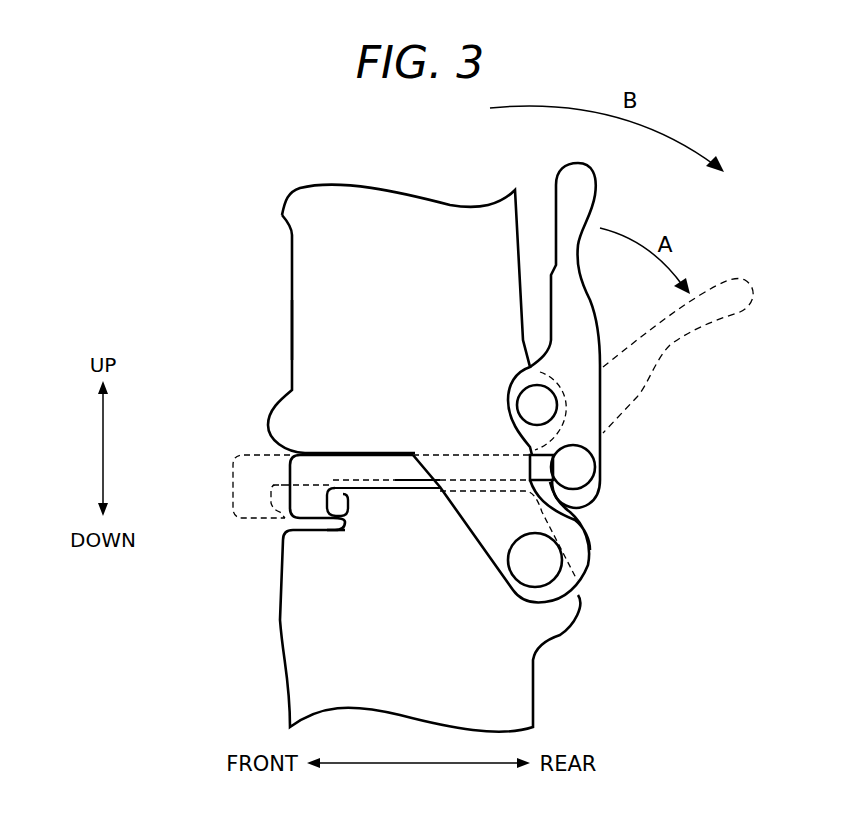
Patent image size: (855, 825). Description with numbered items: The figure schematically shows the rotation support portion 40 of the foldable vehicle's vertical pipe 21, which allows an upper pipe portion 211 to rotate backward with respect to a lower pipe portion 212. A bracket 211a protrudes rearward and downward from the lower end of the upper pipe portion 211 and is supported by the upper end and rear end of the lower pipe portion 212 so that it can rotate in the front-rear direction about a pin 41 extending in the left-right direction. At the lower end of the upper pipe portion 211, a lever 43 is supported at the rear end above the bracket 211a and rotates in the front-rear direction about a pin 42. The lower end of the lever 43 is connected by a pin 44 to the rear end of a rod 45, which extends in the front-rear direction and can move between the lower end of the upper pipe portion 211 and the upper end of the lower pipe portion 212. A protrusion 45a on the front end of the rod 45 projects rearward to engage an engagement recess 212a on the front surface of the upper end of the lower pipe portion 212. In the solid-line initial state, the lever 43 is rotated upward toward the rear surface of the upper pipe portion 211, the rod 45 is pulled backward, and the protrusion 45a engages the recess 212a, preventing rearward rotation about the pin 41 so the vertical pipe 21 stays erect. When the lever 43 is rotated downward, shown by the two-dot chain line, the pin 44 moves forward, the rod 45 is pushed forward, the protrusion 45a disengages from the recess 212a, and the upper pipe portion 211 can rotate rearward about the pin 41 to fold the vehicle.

The vertical pipe 21 is at (291, 264).
The upper pipe portion 211 is at (290, 328).
The bracket 211a is at (495, 575).
The lower pipe portion 212 is at (288, 697).
The engagement recess 212a is at (337, 522).
The rotation support portion 40 is at (685, 441).
The pin 41 is at (560, 590).
The pin 42 is at (515, 392).
The lever 43 is at (598, 192).
The pin 44 is at (595, 470).
The rod 45 is at (362, 492).
The protrusion 45a is at (347, 508).